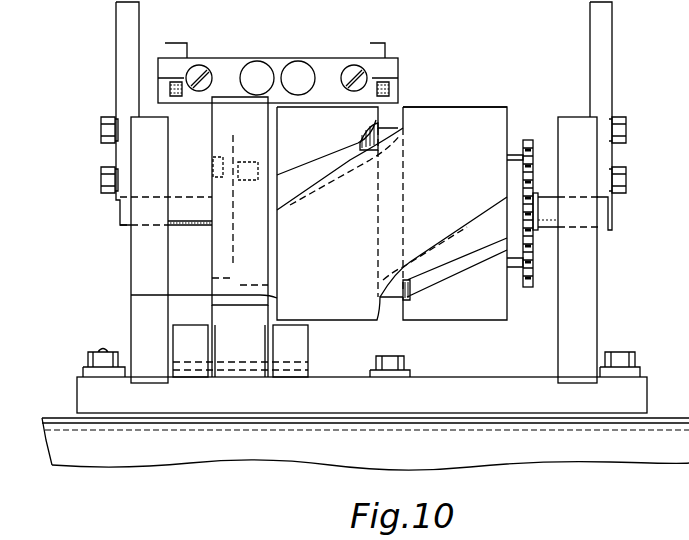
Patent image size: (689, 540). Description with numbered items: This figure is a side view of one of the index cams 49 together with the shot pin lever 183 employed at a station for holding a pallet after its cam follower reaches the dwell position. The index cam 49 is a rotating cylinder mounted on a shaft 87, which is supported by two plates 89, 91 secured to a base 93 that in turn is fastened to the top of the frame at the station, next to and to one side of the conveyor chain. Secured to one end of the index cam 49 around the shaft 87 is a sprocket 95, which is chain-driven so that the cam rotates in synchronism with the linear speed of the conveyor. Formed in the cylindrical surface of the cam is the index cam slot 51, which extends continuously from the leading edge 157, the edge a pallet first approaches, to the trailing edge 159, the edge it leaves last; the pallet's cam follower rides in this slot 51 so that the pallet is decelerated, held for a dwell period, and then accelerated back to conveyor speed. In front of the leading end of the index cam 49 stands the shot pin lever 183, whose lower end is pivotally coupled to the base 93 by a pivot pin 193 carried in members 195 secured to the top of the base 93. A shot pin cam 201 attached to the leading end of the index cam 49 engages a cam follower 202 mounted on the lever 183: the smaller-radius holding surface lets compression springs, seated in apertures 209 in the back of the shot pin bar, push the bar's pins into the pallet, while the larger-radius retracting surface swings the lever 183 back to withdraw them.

The index cam 49 is at (417, 97).
The index cam slot 51 is at (350, 140).
The shaft 87 is at (545, 228).
The plate 89 is at (131, 325).
The plate 91 is at (597, 310).
The base 93 is at (473, 377).
The sprocket 95 is at (527, 137).
The leading edge 157 is at (131, 295).
The trailing edge 159 is at (507, 113).
The shot pin lever 183 is at (212, 247).
The pivot pin 193 is at (230, 340).
The members 195 is at (193, 363).
The cam 201 is at (247, 140).
The cam follower 202 is at (230, 142).
The apertures 209 is at (297, 72).